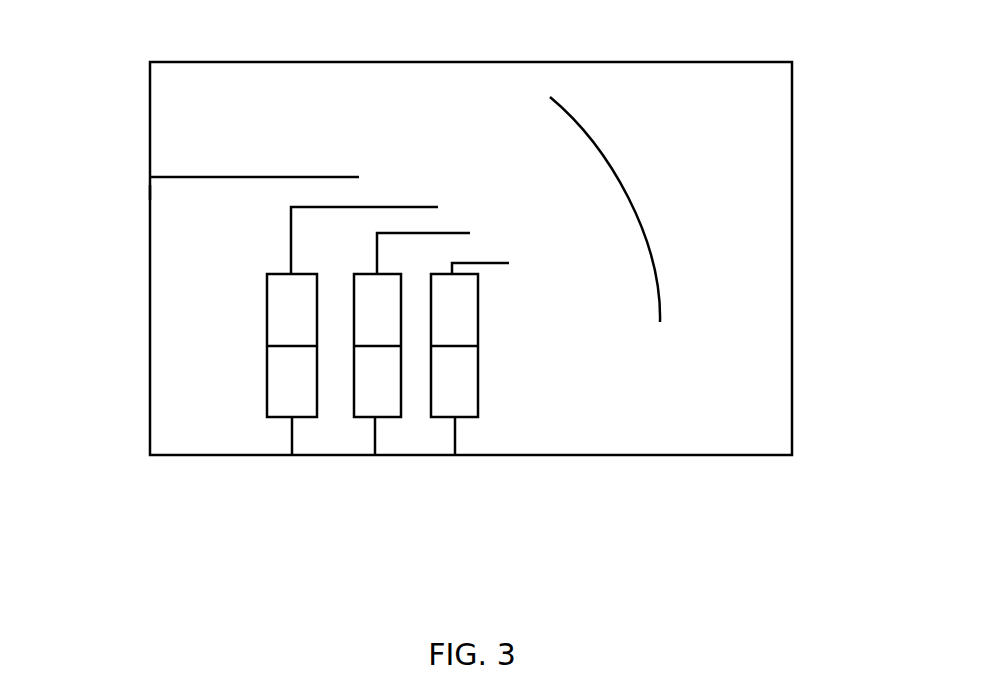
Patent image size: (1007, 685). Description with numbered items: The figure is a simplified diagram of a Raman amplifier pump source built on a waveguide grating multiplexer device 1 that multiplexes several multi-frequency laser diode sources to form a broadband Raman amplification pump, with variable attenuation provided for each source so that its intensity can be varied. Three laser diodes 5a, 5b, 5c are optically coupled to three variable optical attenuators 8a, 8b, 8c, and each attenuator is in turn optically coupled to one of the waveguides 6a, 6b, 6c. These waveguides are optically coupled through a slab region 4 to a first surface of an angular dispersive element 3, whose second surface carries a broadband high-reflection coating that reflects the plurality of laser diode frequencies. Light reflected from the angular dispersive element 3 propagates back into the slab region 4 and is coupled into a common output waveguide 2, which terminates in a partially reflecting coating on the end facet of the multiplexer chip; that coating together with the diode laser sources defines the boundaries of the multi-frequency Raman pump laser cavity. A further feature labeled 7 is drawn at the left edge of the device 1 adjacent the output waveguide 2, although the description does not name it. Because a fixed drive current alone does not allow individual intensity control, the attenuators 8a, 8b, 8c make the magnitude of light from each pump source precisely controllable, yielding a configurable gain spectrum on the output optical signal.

The waveguide grating multiplexer device 1 is at (792, 128).
The common output waveguide 2 is at (263, 177).
The angular dispersive element 3 is at (672, 253).
The slab region 4 is at (473, 163).
The laser diode source 5a is at (275, 418).
The laser diode source 5b is at (369, 418).
The laser diode source 5c is at (463, 417).
The waveguide 6a is at (288, 236).
The waveguide 6b is at (438, 233).
The waveguide 6c is at (503, 267).
The side wall 7 is at (150, 190).
The variable optical attenuator 8a is at (267, 318).
The variable optical attenuator 8b is at (401, 318).
The variable optical attenuator 8c is at (478, 318).